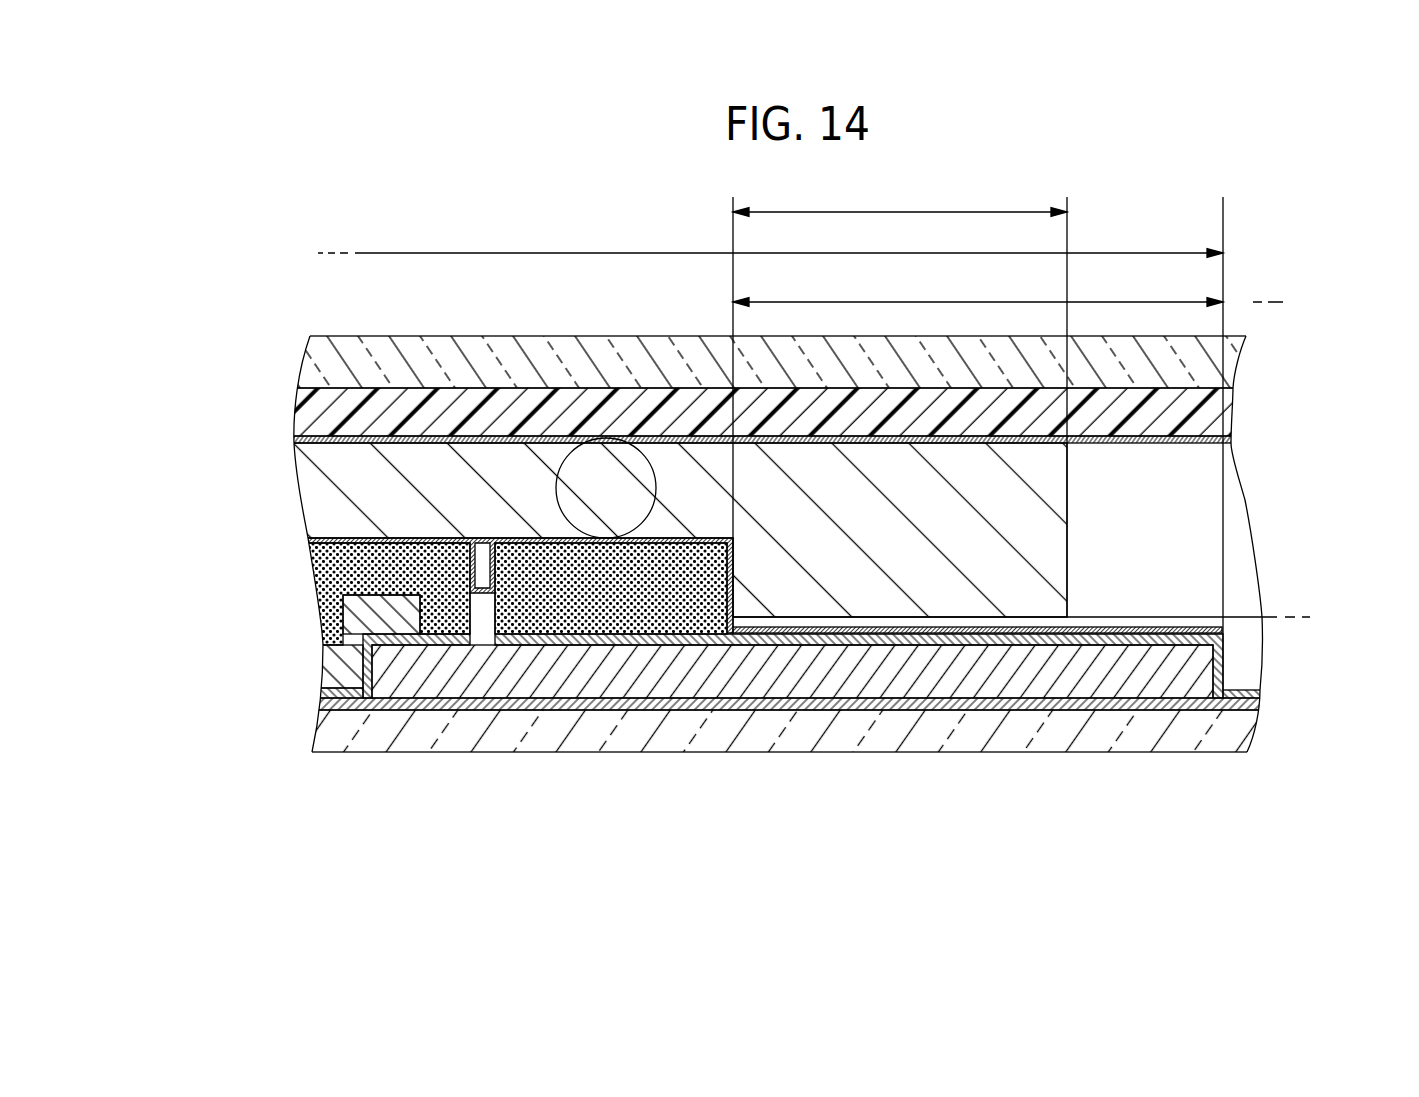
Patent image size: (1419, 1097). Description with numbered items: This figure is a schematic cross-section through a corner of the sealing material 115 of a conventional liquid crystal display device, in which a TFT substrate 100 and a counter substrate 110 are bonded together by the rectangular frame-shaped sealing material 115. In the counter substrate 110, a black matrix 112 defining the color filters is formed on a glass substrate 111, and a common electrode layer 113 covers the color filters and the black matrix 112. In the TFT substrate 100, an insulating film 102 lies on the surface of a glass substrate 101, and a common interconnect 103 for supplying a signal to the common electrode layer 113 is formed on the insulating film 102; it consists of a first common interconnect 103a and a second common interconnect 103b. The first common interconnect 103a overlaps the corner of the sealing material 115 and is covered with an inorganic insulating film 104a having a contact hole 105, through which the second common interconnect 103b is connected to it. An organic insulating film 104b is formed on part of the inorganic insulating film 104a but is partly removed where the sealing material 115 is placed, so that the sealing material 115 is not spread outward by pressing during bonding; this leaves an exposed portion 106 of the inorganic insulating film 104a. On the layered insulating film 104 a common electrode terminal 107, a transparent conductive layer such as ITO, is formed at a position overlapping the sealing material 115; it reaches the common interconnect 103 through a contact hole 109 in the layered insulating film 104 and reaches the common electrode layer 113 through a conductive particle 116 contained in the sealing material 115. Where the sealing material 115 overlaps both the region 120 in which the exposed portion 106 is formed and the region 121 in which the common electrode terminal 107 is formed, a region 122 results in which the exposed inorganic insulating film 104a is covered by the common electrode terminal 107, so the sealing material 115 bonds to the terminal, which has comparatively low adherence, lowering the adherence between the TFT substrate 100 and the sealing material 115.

The TFT substrate 100 is at (667, 661).
The glass substrate 101 is at (330, 736).
The insulating film 102 is at (314, 704).
The common interconnect 103 is at (669, 664).
The first common interconnect 103a is at (328, 672).
The second common interconnect 103b is at (335, 667).
The layered insulating film 104 is at (426, 594).
The inorganic insulating film 104a is at (345, 636).
The organic insulating film 104b is at (323, 582).
The contact hole 105 is at (413, 637).
The exposed portion 106 is at (1057, 592).
The common electrode terminal 107 is at (307, 541).
The contact hole 109 is at (487, 610).
The counter substrate 110 is at (840, 388).
The glass substrate 111 is at (1234, 357).
The black matrix 112 is at (1233, 401).
The common electrode layer 113 is at (1233, 440).
The sealing material 115 is at (1050, 488).
The conductive particle 116 is at (605, 458).
The region where the exposed portion is formed 120 is at (1008, 284).
The region where the common electrode terminal is formed 121 is at (770, 443).
The overlap region 122 is at (900, 400).